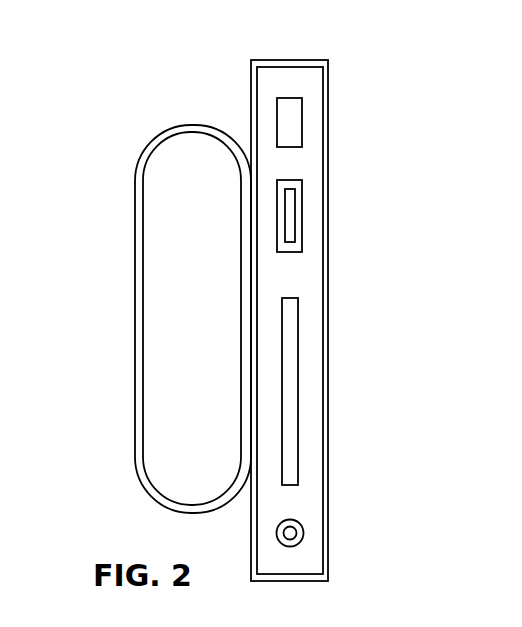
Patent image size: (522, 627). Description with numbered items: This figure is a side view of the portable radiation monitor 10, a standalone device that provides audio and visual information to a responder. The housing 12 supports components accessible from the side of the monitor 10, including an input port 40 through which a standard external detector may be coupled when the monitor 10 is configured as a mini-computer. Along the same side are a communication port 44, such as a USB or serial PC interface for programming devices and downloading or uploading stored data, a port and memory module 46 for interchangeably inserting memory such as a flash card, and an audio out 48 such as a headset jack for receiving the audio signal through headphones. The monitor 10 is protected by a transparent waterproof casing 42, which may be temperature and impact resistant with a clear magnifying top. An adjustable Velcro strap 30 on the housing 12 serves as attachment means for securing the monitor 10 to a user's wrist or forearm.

The radiation monitor 10 is at (126, 51).
The housing 12 is at (302, 281).
The adjustable Velcro strap 30 is at (138, 160).
The input port 40 is at (286, 117).
The transparent waterproof casing 42 is at (317, 59).
The communication port 44 is at (302, 207).
The port and memory module 46 is at (297, 371).
The audio out 48 is at (303, 535).